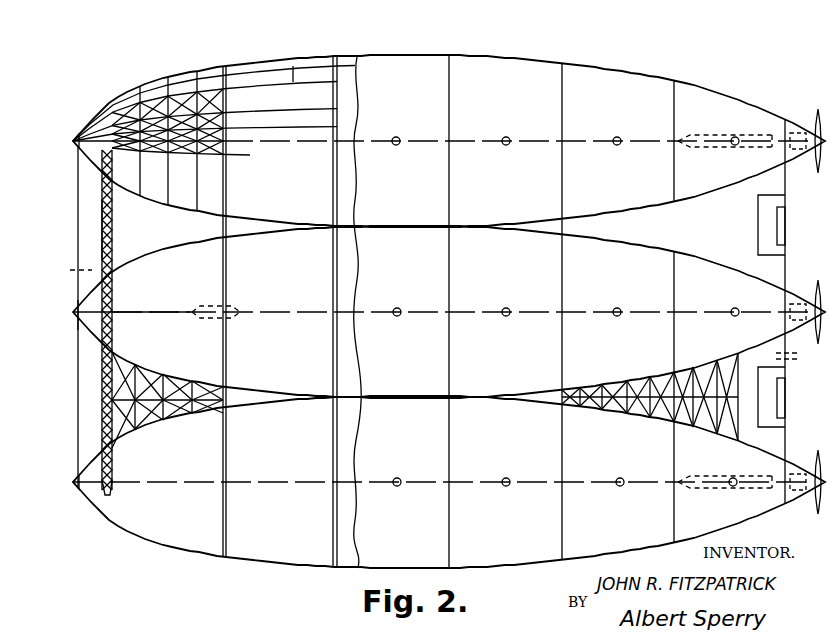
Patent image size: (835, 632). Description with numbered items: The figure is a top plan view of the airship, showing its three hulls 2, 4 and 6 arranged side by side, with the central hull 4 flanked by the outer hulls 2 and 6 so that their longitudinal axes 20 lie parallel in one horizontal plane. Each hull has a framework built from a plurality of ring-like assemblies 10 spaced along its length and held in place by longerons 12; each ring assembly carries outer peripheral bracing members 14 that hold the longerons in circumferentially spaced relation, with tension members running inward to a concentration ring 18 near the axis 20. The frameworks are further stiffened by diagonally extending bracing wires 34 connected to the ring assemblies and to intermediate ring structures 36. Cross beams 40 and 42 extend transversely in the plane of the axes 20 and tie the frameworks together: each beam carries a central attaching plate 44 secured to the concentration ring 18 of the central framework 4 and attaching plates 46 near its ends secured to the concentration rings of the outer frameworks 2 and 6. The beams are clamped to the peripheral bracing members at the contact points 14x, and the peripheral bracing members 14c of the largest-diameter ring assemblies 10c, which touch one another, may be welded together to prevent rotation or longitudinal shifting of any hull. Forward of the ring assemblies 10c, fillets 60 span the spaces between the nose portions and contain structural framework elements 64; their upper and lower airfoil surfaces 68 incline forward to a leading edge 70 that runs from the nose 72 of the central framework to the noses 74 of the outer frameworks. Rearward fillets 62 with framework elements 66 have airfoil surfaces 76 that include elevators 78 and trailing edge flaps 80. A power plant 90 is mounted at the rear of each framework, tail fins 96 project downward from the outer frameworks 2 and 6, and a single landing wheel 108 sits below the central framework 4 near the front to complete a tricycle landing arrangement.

The hull 2 is at (372, 66).
The hull 4 is at (172, 349).
The hull 6 is at (160, 542).
The ring-like assembly 10 is at (113, 97).
The ring assembly of largest diameter 10c is at (335, 505).
The longeron 12 is at (214, 104).
The peripheral bracing member 14 is at (212, 103).
The contact point 14x is at (228, 232).
The peripheral bracing member of largest ring assembly 14c is at (334, 231).
The concentration ring 18 is at (335, 140).
The longitudinal axis 20 is at (403, 140).
The diagonally extending bracing wire 34 is at (136, 146).
The intermediate ring structure 36 is at (196, 170).
The cross beam 40 is at (110, 244).
The cross beam 42 is at (332, 187).
The attaching plate 44 is at (113, 312).
The attaching plate 46 is at (108, 492).
The fillet 60 is at (100, 244).
The fillet 62 is at (665, 238).
The structural framework element 64 is at (158, 425).
The structural framework element 66 is at (650, 402).
The airfoil surface 68 is at (88, 262).
The leading edge 70 is at (78, 208).
The nose 72 is at (78, 318).
The nose 74 is at (78, 138).
The airfoil surface 76 is at (790, 357).
The elevator 78 is at (757, 232).
The trailing edge flap 80 is at (786, 222).
The power plant 90 is at (803, 132).
The stabilizer or tail fin 96 is at (722, 134).
The landing wheel 108 is at (240, 320).